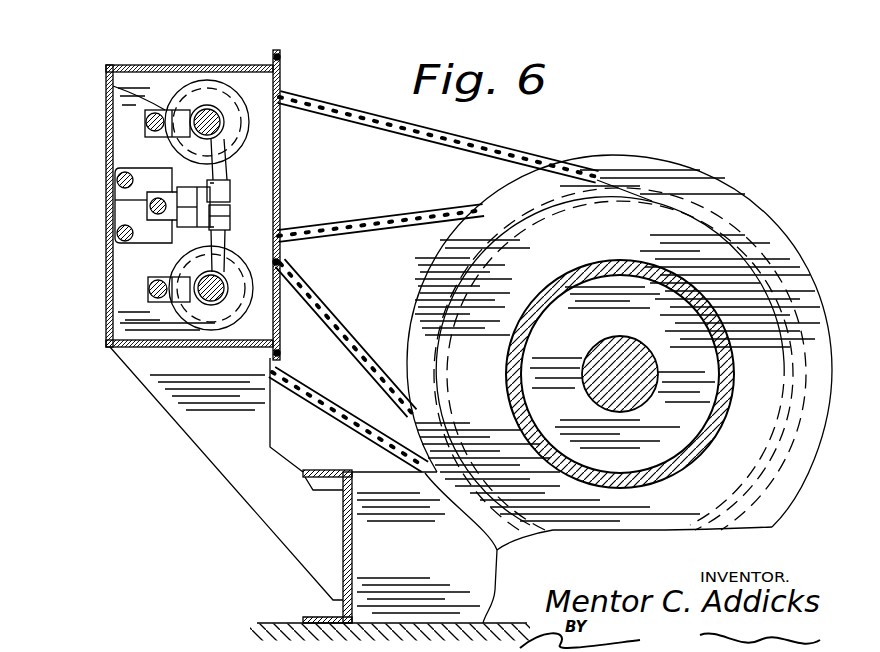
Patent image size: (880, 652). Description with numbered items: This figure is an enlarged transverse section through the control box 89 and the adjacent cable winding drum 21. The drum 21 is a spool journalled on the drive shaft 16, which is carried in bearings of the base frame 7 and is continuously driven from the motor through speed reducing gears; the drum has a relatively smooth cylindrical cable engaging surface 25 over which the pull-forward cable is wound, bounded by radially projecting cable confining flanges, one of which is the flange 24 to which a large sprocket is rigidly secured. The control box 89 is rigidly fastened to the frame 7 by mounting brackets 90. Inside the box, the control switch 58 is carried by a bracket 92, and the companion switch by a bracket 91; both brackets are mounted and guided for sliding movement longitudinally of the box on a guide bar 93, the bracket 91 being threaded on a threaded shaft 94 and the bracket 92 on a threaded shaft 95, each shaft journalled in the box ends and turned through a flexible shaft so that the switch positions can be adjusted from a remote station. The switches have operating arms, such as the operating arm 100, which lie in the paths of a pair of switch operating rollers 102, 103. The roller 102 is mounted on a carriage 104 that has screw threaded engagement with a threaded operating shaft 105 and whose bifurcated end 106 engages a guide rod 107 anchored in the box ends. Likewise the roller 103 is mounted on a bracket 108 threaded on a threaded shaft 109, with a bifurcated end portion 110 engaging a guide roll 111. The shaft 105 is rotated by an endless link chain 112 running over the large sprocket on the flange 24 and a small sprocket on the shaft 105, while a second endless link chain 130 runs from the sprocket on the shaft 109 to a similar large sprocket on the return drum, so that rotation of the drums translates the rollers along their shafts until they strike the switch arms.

The control box 89 is at (168, 65).
The bifurcated end 106 is at (113, 86).
The guide rod 107 is at (146, 122).
The bracket 92 is at (117, 168).
The threaded shaft 95 is at (117, 181).
The guide bar 93 is at (150, 206).
The threaded shaft 94 is at (117, 234).
The bracket 91 is at (143, 241).
The control switch 58 is at (172, 229).
The guide roll 111 is at (149, 291).
The bifurcated end portion 110 is at (153, 313).
The threaded shaft 109 is at (230, 296).
The threaded operating shaft 105 is at (225, 123).
The carriage 104 is at (228, 158).
The operating arm 100 is at (231, 185).
The switch operating roller 102 is at (231, 200).
The switch operating roller 103 is at (231, 222).
The bracket 108 is at (238, 258).
The endless link chain 112 is at (439, 135).
The endless link chain 130 is at (403, 217).
The mounting brackets 90 is at (266, 420).
The base frame 7 is at (410, 566).
The cable winding drum 21 is at (713, 181).
The cable engaging surface 25 is at (616, 260).
The drive shaft 16 is at (625, 338).
The cable confining flange 24 is at (770, 370).